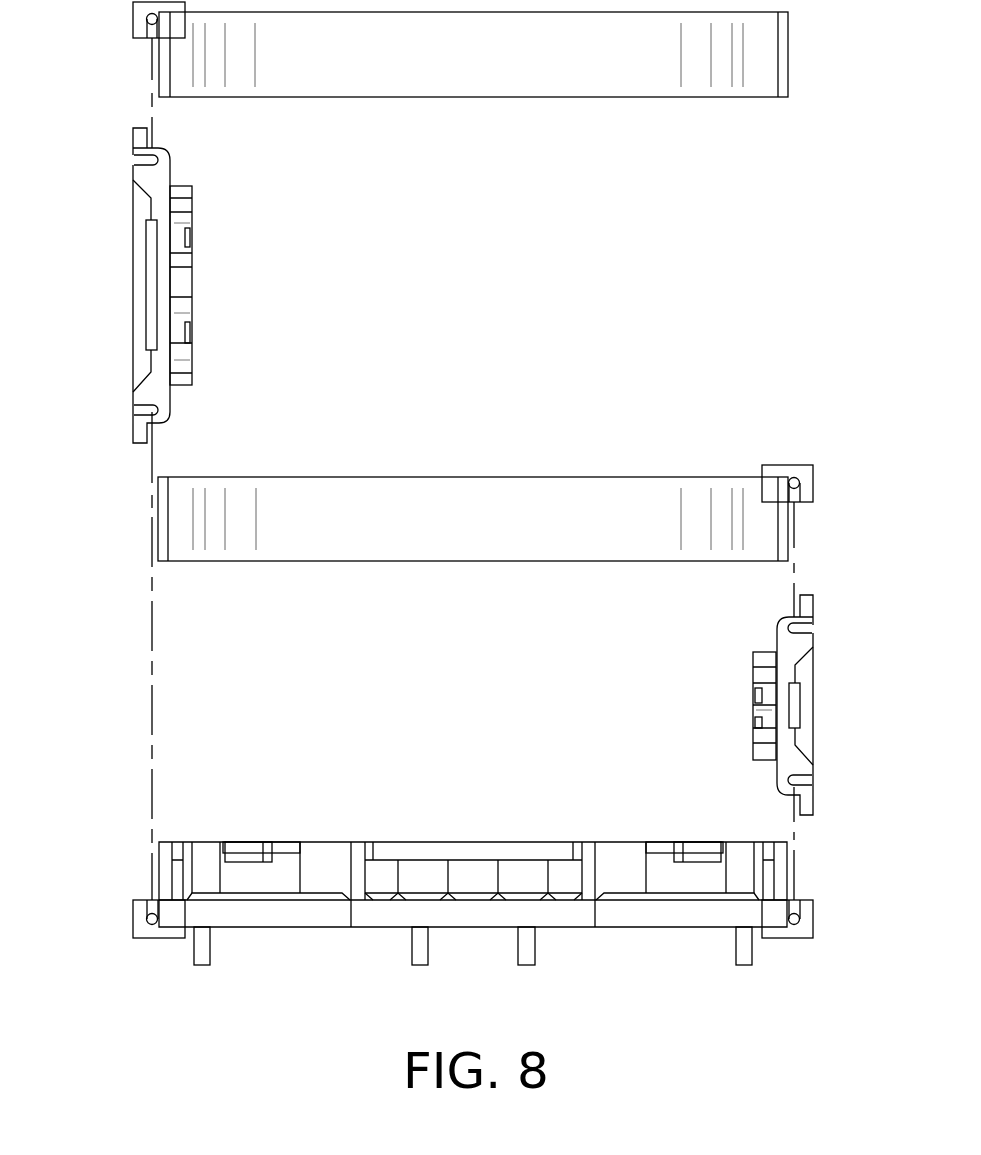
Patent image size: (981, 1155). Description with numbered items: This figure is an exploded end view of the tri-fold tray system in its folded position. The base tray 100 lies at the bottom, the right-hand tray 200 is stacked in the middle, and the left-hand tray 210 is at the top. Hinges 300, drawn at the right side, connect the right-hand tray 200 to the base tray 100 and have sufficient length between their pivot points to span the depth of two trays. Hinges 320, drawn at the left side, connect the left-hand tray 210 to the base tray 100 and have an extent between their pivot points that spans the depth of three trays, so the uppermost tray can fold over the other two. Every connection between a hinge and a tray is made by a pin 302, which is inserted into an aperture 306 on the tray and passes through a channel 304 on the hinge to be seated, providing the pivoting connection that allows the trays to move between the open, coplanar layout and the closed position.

The base tray 100 is at (444, 852).
The right-hand tray 200 is at (485, 500).
The left-hand tray 210 is at (460, 82).
The hinge 300 is at (763, 732).
The pin 302 is at (146, 19).
The channel 304 is at (137, 162).
The aperture 306 is at (150, 40).
The hinge 320 is at (188, 262).